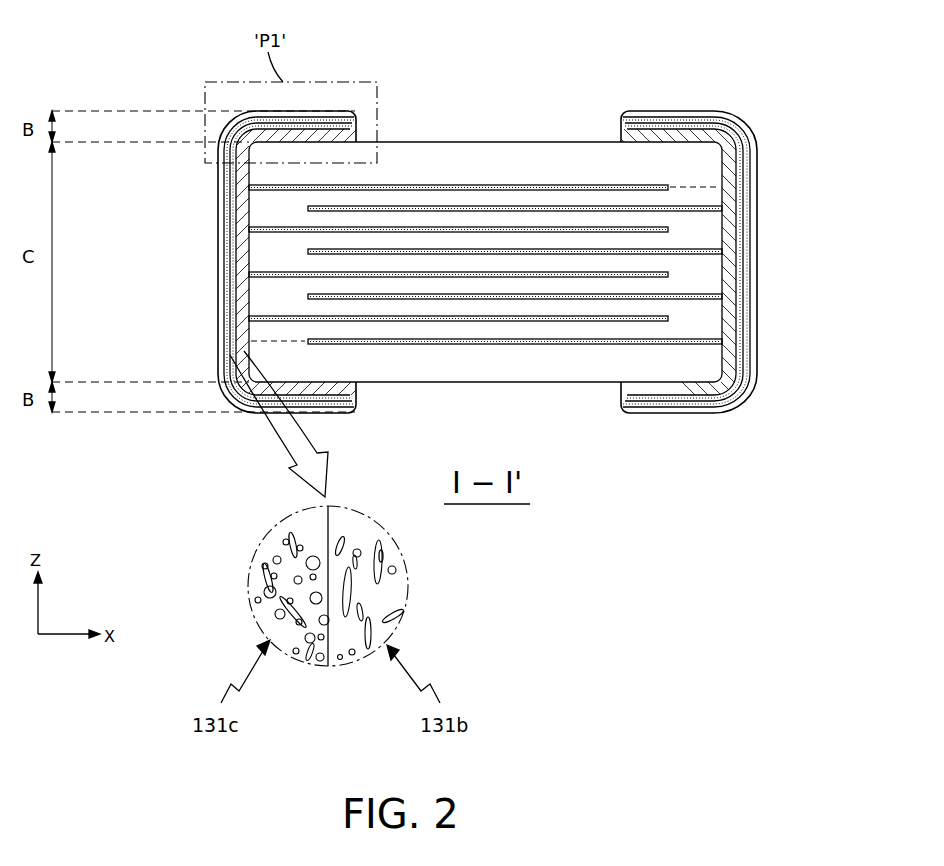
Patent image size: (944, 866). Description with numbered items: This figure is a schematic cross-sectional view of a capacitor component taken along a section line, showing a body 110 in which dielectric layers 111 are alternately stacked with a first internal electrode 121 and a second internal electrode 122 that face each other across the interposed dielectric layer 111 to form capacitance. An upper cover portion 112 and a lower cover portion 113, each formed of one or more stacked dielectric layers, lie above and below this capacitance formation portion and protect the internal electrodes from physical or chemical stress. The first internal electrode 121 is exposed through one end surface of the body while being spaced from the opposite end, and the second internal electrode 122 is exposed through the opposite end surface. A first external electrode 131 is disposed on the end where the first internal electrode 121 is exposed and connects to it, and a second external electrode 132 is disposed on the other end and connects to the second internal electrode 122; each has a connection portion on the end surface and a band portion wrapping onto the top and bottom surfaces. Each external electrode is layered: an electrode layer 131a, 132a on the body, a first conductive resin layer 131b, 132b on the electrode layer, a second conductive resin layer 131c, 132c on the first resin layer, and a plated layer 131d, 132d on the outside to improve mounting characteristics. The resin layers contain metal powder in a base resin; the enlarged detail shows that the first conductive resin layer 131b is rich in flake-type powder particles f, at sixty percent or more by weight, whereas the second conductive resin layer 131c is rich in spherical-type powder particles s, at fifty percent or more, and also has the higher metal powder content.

The body 110 is at (420, 141).
The dielectric layer 111 is at (384, 225).
The upper cover portion 112 is at (474, 158).
The lower cover portion 113 is at (493, 368).
The first internal electrode 121 is at (548, 186).
The second internal electrode 122 is at (607, 206).
The first external electrode 131 is at (349, 260).
The electrode layer 131a is at (244, 287).
The first conductive resin layer 131b is at (238, 302).
The second conductive resin layer 131c is at (231, 332).
The plated layer 131d is at (128, 279).
The second external electrode 132 is at (672, 260).
The electrode layer 132a is at (738, 254).
The first conductive resin layer 132b is at (743, 280).
The second conductive resin layer 132c is at (749, 308).
The plated layer 132d is at (755, 335).
The spherical-type powder particle s is at (358, 549).
The flake-type powder particle f is at (383, 556).